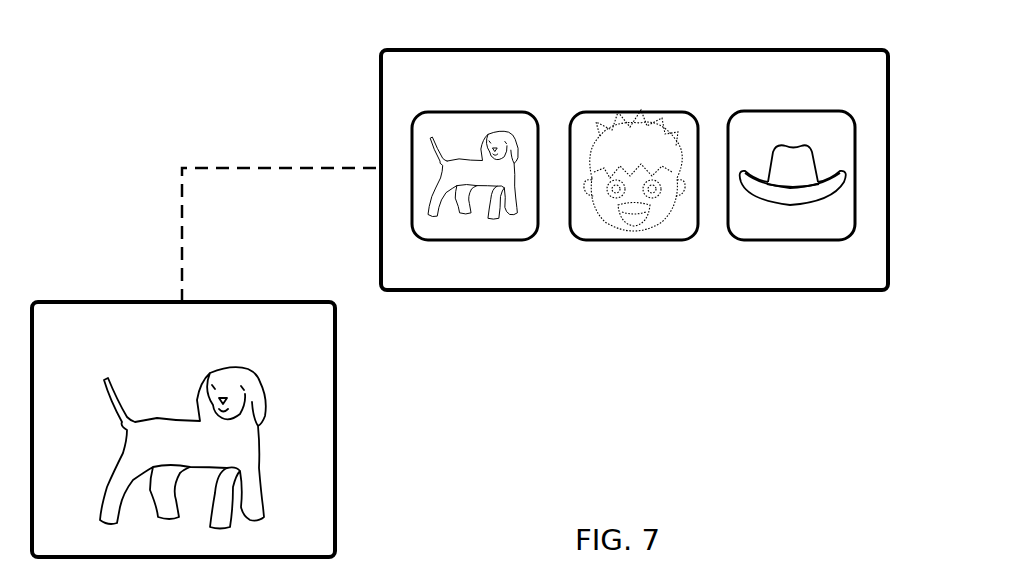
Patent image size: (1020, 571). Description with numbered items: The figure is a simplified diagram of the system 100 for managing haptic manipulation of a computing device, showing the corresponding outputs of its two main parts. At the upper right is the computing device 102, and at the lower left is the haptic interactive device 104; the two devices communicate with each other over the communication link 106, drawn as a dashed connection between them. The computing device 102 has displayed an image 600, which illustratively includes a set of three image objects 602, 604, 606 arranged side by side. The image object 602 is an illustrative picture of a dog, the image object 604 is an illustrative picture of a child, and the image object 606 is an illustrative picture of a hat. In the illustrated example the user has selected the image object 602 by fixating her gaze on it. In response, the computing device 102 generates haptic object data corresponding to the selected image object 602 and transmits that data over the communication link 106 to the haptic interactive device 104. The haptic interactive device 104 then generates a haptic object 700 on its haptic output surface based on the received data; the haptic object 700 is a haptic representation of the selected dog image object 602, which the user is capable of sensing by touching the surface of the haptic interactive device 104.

The system 100 is at (198, 85).
The computing device 102 is at (632, 50).
The haptic interactive device 104 is at (300, 302).
The communication link 106 is at (247, 168).
The image 600 is at (398, 73).
The image object 602 is at (475, 240).
The image object 604 is at (633, 240).
The image object 606 is at (793, 240).
The haptic object 700 is at (311, 476).